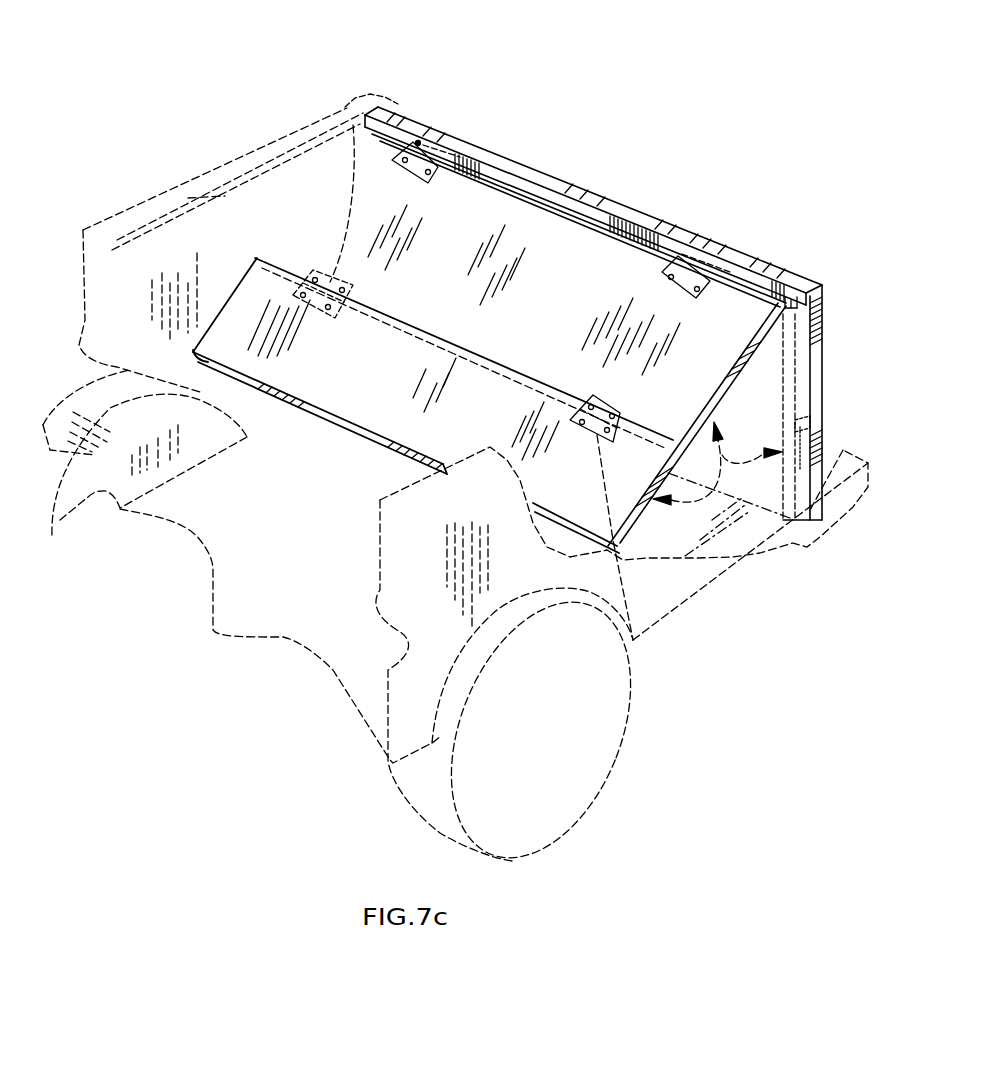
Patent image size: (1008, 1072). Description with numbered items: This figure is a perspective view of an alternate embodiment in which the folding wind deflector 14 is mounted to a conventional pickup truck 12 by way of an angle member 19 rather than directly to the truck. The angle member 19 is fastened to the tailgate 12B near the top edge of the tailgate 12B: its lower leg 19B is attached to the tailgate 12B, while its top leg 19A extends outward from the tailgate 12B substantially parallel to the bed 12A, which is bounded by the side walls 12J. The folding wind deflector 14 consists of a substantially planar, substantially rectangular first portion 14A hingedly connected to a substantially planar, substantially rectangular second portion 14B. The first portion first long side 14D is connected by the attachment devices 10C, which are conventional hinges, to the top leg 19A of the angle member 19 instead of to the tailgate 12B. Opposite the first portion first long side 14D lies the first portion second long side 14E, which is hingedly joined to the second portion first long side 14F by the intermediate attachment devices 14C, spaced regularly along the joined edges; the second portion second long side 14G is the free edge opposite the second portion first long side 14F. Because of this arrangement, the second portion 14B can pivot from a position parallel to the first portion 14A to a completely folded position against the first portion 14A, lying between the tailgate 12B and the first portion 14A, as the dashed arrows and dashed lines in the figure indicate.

The attachment devices 10C is at (418, 162).
The pickup truck 12 is at (793, 587).
The bed 12A is at (250, 553).
The tailgate 12B is at (660, 220).
The side walls 12J is at (270, 193).
The folding wind deflector 14 is at (783, 366).
The first portion 14A is at (495, 227).
The second portion 14B is at (243, 320).
The intermediate attachment devices 14C is at (345, 107).
The first portion first long side 14D is at (793, 311).
The first portion second long side 14E is at (645, 432).
The second portion first long side 14F is at (280, 262).
The second portion second long side 14G is at (213, 360).
The angle member 19 is at (581, 205).
The top leg 19A is at (477, 211).
The lower leg 19B is at (823, 298).